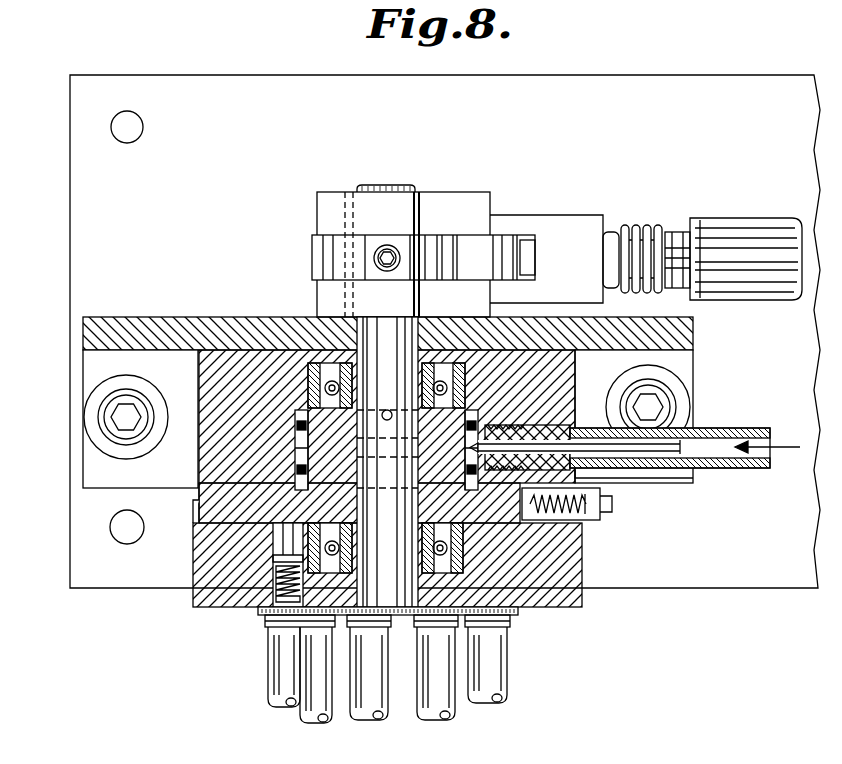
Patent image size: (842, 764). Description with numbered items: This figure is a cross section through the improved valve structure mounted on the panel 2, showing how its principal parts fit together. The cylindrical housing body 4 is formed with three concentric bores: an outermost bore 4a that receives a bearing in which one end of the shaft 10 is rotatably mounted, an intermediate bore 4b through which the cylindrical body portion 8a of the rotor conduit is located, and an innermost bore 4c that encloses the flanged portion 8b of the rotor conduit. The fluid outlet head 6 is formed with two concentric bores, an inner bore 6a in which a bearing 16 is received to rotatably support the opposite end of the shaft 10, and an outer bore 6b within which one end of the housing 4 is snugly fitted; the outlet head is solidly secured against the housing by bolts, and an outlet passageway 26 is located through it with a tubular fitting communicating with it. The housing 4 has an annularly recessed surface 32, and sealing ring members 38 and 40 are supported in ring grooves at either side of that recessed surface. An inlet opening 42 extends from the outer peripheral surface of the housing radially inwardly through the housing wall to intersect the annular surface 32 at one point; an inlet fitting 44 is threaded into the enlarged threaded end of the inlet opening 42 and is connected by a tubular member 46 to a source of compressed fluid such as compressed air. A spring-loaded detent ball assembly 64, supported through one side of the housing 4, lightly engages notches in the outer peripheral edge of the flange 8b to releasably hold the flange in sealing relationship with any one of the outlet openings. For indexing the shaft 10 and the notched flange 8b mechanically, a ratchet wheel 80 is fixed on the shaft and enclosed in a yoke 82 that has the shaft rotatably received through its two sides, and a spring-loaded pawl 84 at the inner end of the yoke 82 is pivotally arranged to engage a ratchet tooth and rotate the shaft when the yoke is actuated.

The panel 2 is at (693, 330).
The housing body 4 is at (218, 362).
The outermost bore 4a is at (300, 410).
The intermediate bore 4b is at (287, 413).
The innermost bore 4c is at (205, 553).
The fluid outlet head 6 is at (197, 607).
The inner bore 6a is at (523, 610).
The outer bore 6b is at (203, 503).
The cylindrical body portion 8a is at (472, 413).
The flanged portion 8b is at (470, 530).
The shaft 10 is at (393, 190).
The bearing 16 is at (456, 640).
The outlet passageway 26 is at (272, 547).
The annularly recessed surface 32 is at (303, 455).
The sealing ring member 38 is at (303, 470).
The sealing ring member 40 is at (303, 426).
The inlet opening 42 is at (482, 445).
The inlet fitting 44 is at (607, 472).
The tubular member 46 is at (713, 428).
The spring-loaded detent ball assembly 64 is at (582, 539).
The ratchet wheel 80 is at (323, 255).
The yoke 82 is at (580, 226).
The spring-loaded pawl 84 is at (520, 250).